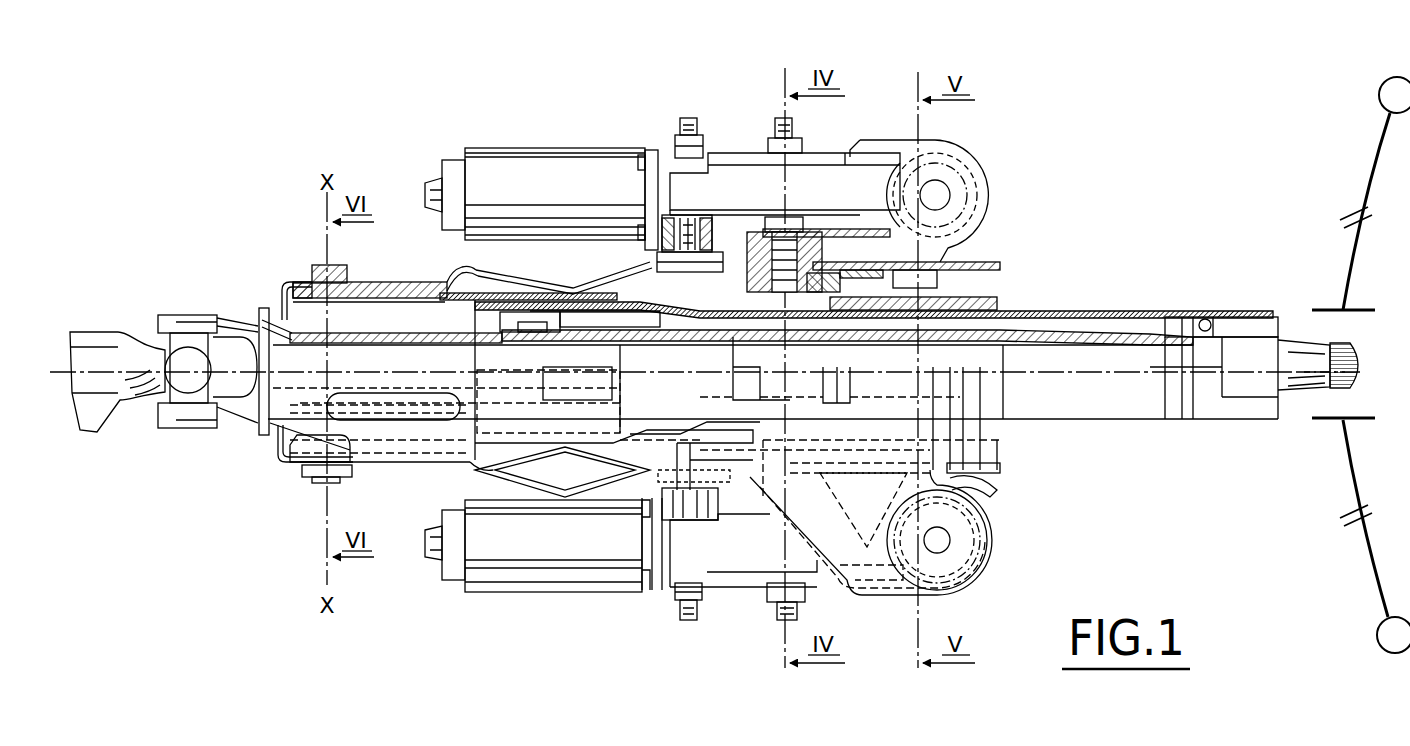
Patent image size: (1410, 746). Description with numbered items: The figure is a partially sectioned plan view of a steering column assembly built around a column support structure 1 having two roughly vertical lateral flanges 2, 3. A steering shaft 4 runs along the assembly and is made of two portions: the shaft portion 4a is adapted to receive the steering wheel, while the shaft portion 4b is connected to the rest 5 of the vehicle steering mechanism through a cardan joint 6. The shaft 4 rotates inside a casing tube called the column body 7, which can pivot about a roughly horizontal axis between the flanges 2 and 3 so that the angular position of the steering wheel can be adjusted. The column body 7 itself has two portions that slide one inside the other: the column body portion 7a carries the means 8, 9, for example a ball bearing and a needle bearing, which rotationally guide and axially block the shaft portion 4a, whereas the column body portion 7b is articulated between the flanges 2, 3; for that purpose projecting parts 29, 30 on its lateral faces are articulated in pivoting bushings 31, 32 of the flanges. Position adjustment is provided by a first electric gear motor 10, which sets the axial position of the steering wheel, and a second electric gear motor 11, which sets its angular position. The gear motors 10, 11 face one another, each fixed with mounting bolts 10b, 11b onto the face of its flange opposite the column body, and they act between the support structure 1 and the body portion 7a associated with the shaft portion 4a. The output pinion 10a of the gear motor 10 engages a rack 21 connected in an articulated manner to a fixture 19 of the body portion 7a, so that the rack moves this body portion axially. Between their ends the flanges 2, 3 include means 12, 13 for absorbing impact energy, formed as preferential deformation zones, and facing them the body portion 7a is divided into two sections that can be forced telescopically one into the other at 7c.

The column support structure 1 is at (263, 460).
The lateral flange 2 is at (276, 280).
The lateral flange 3 is at (296, 468).
The steering shaft 4 is at (1048, 332).
The shaft portion 4a is at (998, 308).
The shaft portion 4b is at (400, 333).
The rest of the steering mechanism 5 is at (105, 324).
The cardan joint 6 is at (188, 312).
The column body 7 is at (1110, 306).
The column body portion 7a is at (1162, 310).
The column body portion 7b is at (396, 286).
The telescopic junction 7c is at (483, 292).
The ball bearing 8 is at (1212, 320).
The needle bearing 9 is at (500, 320).
The first electric gear motor 10 is at (658, 140).
The output pinion 10a is at (752, 282).
The mounting bolts 10b is at (774, 114).
The second electric gear motor 11 is at (585, 598).
The mounting bolts 11b is at (776, 624).
The means for absorbing impact energy 12 is at (592, 271).
The means for absorbing impact energy 13 is at (530, 477).
The fixture 19 is at (990, 275).
The rack 21 is at (767, 292).
The projecting part 29 is at (318, 262).
The projecting part 30 is at (345, 486).
The pivoting bushing 31 is at (300, 280).
The pivoting bushing 32 is at (354, 473).